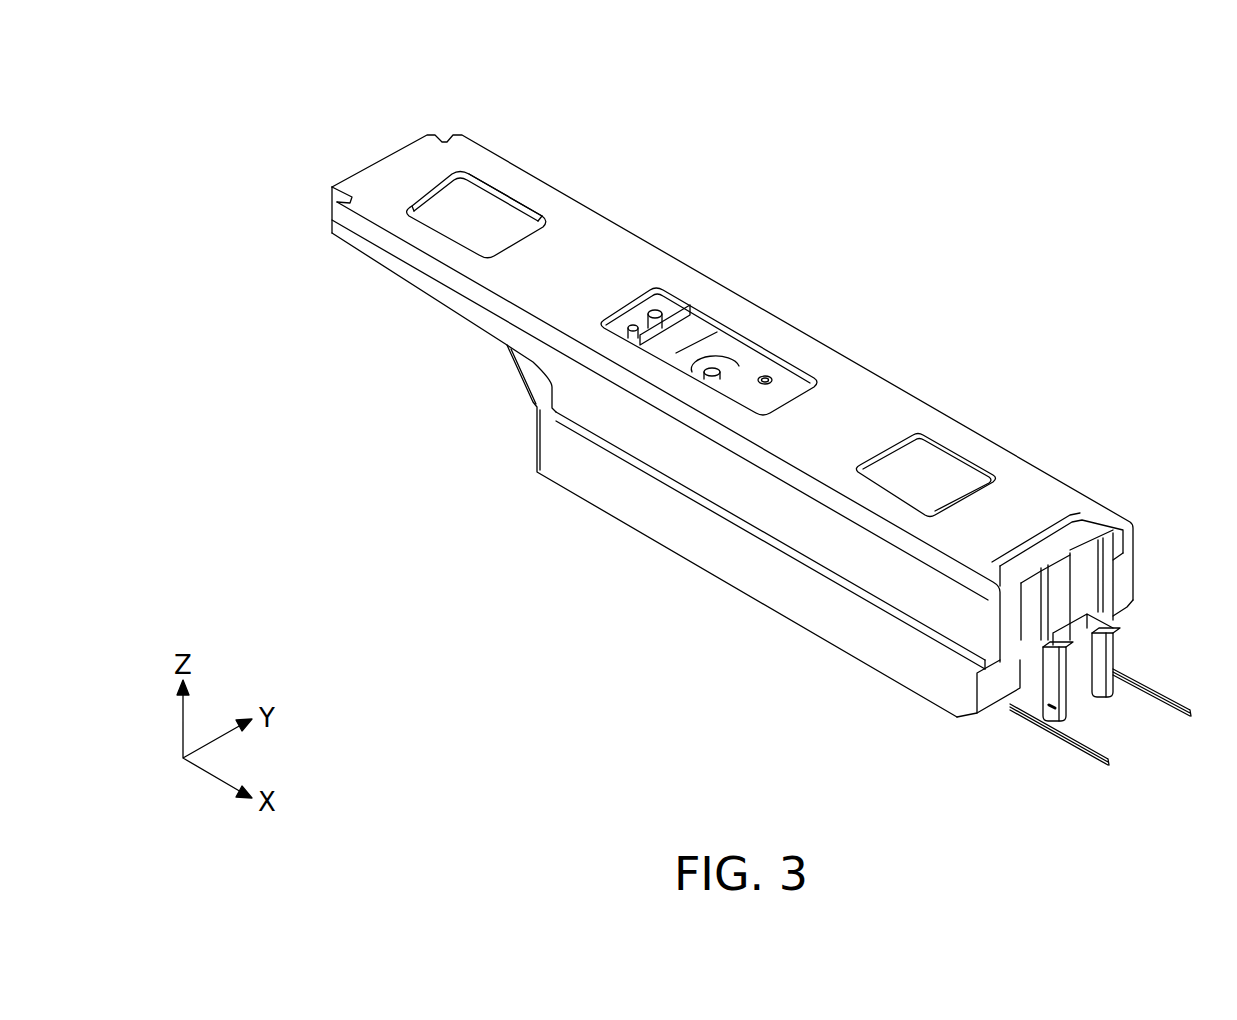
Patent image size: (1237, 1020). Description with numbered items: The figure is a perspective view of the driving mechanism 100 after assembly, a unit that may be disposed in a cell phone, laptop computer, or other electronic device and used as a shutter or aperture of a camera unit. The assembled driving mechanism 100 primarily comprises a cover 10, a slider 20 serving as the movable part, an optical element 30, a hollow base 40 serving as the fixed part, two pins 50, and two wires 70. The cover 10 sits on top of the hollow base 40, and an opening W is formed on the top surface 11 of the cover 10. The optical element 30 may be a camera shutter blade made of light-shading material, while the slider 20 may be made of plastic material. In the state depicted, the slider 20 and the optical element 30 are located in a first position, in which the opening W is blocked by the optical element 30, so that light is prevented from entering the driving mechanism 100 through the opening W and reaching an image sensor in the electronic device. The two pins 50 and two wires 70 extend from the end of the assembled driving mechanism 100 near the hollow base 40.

The driving mechanism 100 is at (246, 82).
The cover 10 is at (617, 226).
The top surface 11 is at (865, 408).
The slider 20 is at (780, 396).
The optical element 30 is at (510, 229).
The opening W is at (497, 204).
The hollow base 40 is at (615, 518).
The pins 50 is at (1062, 700).
The wires 70 is at (1173, 697).